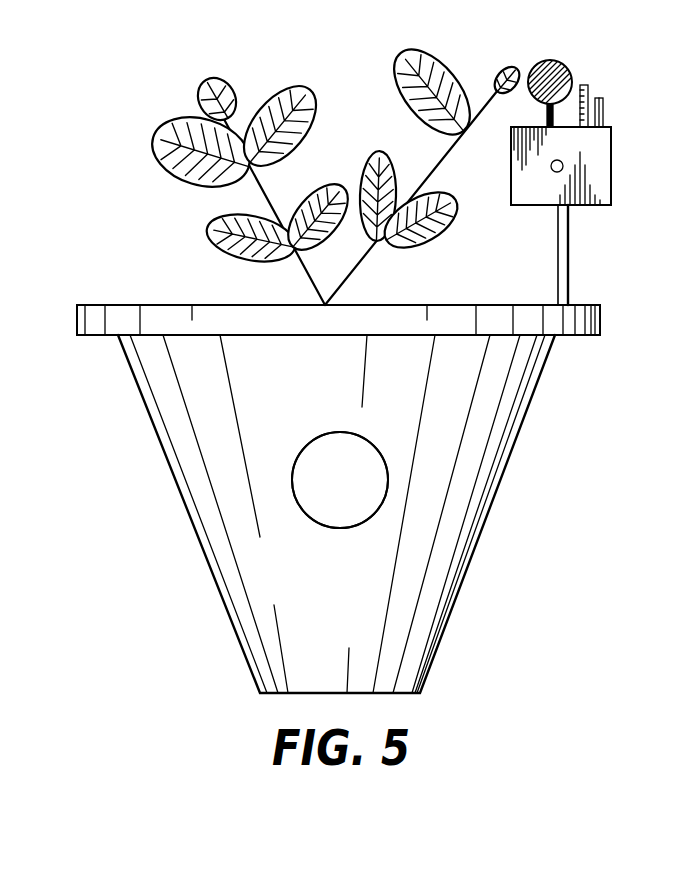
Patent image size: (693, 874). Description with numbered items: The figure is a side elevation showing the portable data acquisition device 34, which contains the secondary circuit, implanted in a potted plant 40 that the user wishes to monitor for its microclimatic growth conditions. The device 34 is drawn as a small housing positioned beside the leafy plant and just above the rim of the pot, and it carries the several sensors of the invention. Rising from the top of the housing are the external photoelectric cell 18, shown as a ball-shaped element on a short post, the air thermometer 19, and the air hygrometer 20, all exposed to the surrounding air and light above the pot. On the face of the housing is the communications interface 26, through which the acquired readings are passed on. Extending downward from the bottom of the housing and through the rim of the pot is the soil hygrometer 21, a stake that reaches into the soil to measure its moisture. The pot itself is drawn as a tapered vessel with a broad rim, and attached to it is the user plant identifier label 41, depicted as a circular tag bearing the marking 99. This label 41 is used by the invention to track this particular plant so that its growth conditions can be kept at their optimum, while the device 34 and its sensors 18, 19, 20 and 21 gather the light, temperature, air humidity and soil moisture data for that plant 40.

The external photoelectric cell 18 is at (546, 60).
The air thermometer 19 is at (590, 86).
The air hygrometer 20 is at (605, 116).
The soil hygrometer 21 is at (570, 252).
The communications interface 26 is at (551, 167).
The portable data acquisition device 34 is at (611, 168).
The potted plant 40 is at (501, 478).
The user plant identifier label 41 is at (324, 526).
The indicia 99 is at (340, 480).